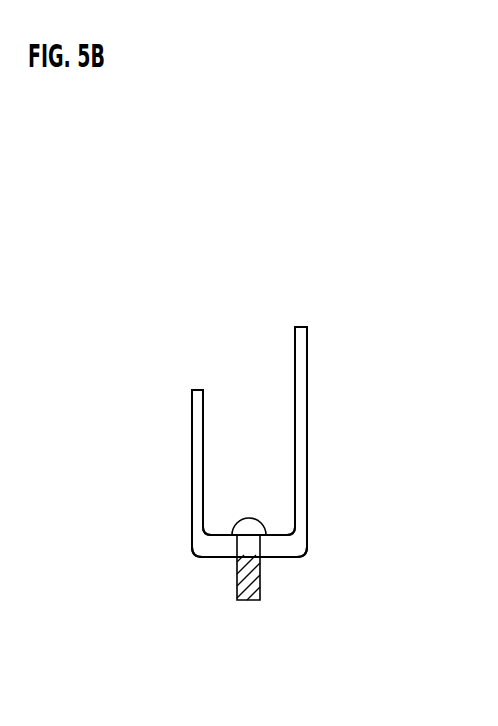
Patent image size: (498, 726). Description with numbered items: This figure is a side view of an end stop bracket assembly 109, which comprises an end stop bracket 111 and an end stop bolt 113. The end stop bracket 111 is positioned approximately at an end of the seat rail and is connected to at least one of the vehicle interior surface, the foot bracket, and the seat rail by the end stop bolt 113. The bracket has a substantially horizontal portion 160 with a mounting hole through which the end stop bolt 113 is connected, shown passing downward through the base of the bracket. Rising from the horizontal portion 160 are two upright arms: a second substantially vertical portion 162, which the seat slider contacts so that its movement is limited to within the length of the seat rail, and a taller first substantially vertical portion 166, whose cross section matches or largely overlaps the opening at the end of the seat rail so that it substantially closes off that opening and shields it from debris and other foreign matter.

The end stop bracket assembly 109 is at (193, 297).
The end stop bracket 111 is at (330, 335).
The end stop bolt 113 is at (237, 568).
The substantially horizontal portion 160 is at (277, 557).
The second substantially vertical portion 162 is at (192, 448).
The first substantially vertical portion 166 is at (307, 432).